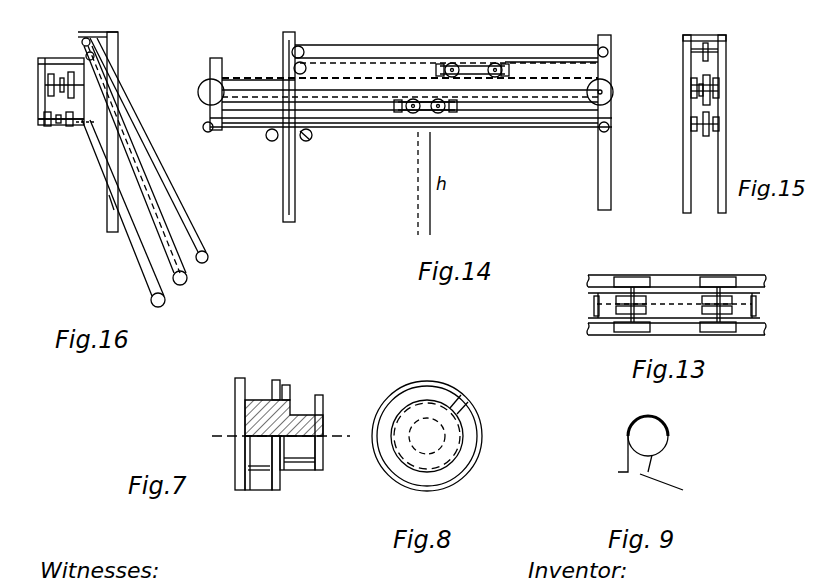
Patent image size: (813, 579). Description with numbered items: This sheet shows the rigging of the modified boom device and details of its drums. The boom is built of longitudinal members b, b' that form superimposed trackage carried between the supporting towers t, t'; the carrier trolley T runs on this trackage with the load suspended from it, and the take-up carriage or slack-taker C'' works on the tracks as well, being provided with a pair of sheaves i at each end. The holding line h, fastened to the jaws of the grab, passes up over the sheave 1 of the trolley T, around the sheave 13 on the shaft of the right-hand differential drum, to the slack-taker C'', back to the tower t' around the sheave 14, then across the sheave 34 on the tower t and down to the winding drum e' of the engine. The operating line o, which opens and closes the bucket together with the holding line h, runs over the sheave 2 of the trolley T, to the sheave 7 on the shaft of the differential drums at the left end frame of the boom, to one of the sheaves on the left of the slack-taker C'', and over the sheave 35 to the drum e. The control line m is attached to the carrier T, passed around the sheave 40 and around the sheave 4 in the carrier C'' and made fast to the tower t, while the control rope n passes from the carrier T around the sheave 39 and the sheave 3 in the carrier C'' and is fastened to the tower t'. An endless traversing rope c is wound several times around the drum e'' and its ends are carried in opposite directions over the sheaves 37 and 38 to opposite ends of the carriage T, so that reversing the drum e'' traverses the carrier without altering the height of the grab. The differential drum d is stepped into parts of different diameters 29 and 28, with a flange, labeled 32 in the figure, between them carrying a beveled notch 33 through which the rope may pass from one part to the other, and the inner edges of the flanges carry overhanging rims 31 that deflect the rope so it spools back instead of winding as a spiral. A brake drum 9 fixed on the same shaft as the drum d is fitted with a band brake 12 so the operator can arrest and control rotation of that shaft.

In FIG. 14, the sheave 1 is at (441, 113).
In FIG. 14, the sheave 2 is at (412, 112).
In FIG. 14, the sheave 3 is at (495, 61).
In FIG. 13, the sheave 3 is at (754, 305).
In FIG. 14, the sheave 4 is at (452, 61).
In FIG. 13, the sheave 4 is at (596, 304).
In FIG. 14, the sheave 7 is at (198, 92).
In FIG. 9, the brake drum 9 is at (643, 444).
In FIG. 9, the band brake 12 is at (660, 467).
In FIG. 14, the sheave 13 is at (606, 84).
In FIG. 15, the sheave 13 is at (700, 96).
In FIG. 14, the sheave 14 is at (609, 52).
In FIG. 15, the sheave 14 is at (706, 44).
In FIG. 7, the drum part 28 is at (297, 453).
In FIG. 7, the drum part 29 is at (258, 463).
In FIG. 7, the rim 31 is at (242, 380).
In FIG. 8, the rim 31 is at (440, 384).
In FIG. 7, the flange 32 is at (276, 380).
In FIG. 8, the flange 32 is at (412, 392).
In FIG. 7, the beveled notch 33 is at (284, 396).
In FIG. 8, the beveled notch 33 is at (462, 402).
In FIG. 14, the sheave 34 is at (292, 54).
In FIG. 16, the sheave 34 is at (84, 40).
In FIG. 14, the sheave 35 is at (308, 70).
In FIG. 16, the sheave 35 is at (88, 54).
In FIG. 14, the sheave 37 is at (619, 127).
In FIG. 16, the sheave 37 is at (60, 144).
In FIG. 15, the sheave 37 is at (706, 133).
In FIG. 14, the sheave 38 is at (318, 140).
In FIG. 16, the sheave 38 is at (88, 114).
In FIG. 14, the sheave 39 is at (611, 95).
In FIG. 15, the sheave 39 is at (712, 96).
In FIG. 14, the sheave 40 is at (208, 72).
In FIG. 16, the sheave 40 is at (46, 98).
In FIG. 14, the longitudinal member b is at (410, 139).
In FIG. 16, the longitudinal member b is at (57, 131).
In FIG. 15, the longitudinal member b is at (706, 122).
In FIG. 14, the longitudinal member b' is at (258, 54).
In FIG. 16, the longitudinal member b' is at (53, 64).
In FIG. 15, the longitudinal member b' is at (708, 84).
In FIG. 13, the longitudinal member b' is at (664, 303).
In FIG. 14, the endless traversing rope c is at (411, 136).
In FIG. 16, the endless traversing rope c is at (136, 256).
In FIG. 7, the differential drum d is at (236, 414).
In FIG. 8, the differential drum d is at (427, 436).
In FIG. 16, the winding drum e is at (189, 278).
In FIG. 16, the winding drum e' is at (212, 256).
In FIG. 16, the winding drum e'' is at (173, 300).
In FIG. 14, the holding line h is at (446, 41).
In FIG. 16, the holding line h is at (178, 186).
In FIG. 13, the roller i is at (675, 305).
In FIG. 14, the control rope m is at (449, 51).
In FIG. 14, the control rope n is at (552, 60).
In FIG. 14, the operating line o is at (410, 183).
In FIG. 16, the operating line o is at (160, 218).
In FIG. 14, the supporting tower t is at (289, 114).
In FIG. 16, the supporting tower t is at (98, 132).
In FIG. 14, the supporting tower t' is at (595, 123).
In FIG. 15, the supporting tower t' is at (712, 124).
In FIG. 14, the carrier trolley T is at (426, 112).
In FIG. 14, the take-up carriage C'' is at (472, 46).
In FIG. 13, the take-up carriage C'' is at (674, 282).